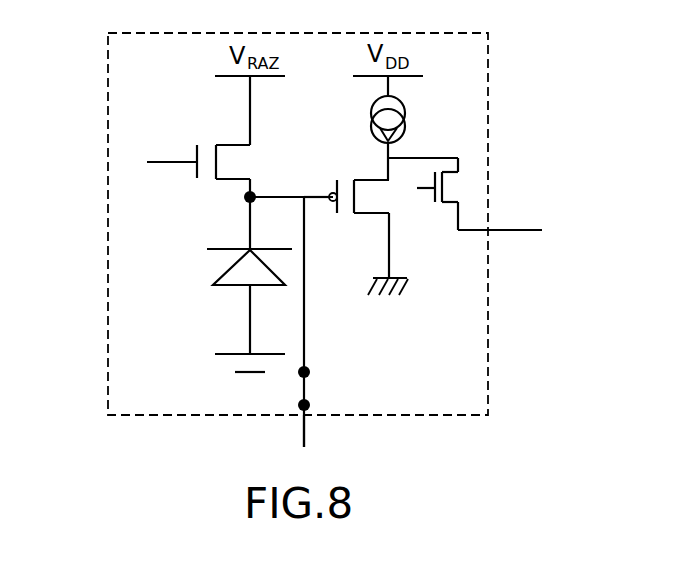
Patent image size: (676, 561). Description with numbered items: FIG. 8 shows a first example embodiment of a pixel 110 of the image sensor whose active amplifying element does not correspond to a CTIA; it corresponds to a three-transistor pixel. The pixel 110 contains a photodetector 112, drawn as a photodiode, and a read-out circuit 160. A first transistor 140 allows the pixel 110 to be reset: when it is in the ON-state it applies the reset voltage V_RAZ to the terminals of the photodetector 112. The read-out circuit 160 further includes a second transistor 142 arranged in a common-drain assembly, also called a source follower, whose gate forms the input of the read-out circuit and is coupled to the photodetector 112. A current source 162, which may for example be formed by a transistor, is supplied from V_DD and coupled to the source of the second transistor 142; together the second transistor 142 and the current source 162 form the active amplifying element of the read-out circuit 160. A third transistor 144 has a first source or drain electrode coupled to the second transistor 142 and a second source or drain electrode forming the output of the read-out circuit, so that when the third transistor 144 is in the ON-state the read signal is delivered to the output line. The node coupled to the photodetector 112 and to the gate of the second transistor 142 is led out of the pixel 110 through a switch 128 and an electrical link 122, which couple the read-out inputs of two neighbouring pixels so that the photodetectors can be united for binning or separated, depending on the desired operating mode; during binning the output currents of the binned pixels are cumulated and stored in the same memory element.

The pixel 110 is at (488, 50).
The read-out circuit 160 is at (197, 127).
The first transistor 140 is at (225, 182).
The photodetector 112 is at (243, 267).
The switch 128 is at (303, 390).
The electrical link 122 is at (304, 442).
The current source 162 is at (407, 115).
The second transistor 142 is at (372, 178).
The third transistor 144 is at (445, 203).